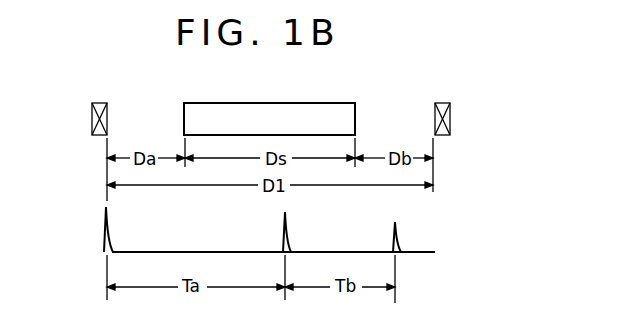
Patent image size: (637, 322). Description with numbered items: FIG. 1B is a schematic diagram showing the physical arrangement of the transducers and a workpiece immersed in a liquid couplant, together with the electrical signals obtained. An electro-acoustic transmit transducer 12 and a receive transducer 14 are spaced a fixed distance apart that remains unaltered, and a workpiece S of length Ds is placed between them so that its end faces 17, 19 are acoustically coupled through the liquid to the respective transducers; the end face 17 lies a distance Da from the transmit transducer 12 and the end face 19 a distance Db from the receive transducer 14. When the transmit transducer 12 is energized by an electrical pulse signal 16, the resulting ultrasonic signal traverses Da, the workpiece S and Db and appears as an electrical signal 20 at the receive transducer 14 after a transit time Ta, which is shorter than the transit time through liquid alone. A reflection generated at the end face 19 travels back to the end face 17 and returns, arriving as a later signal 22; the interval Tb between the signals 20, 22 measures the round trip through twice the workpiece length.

The transmit transducer 12 is at (93, 104).
The receive transducer 14 is at (448, 110).
The workpiece S is at (338, 103).
The end face of workpiece 17 is at (184, 117).
The end face of workpiece 19 is at (355, 117).
The electrical pulse signal 16 is at (105, 211).
The electrical signal 20 is at (282, 220).
The reflection signal 22 is at (398, 225).